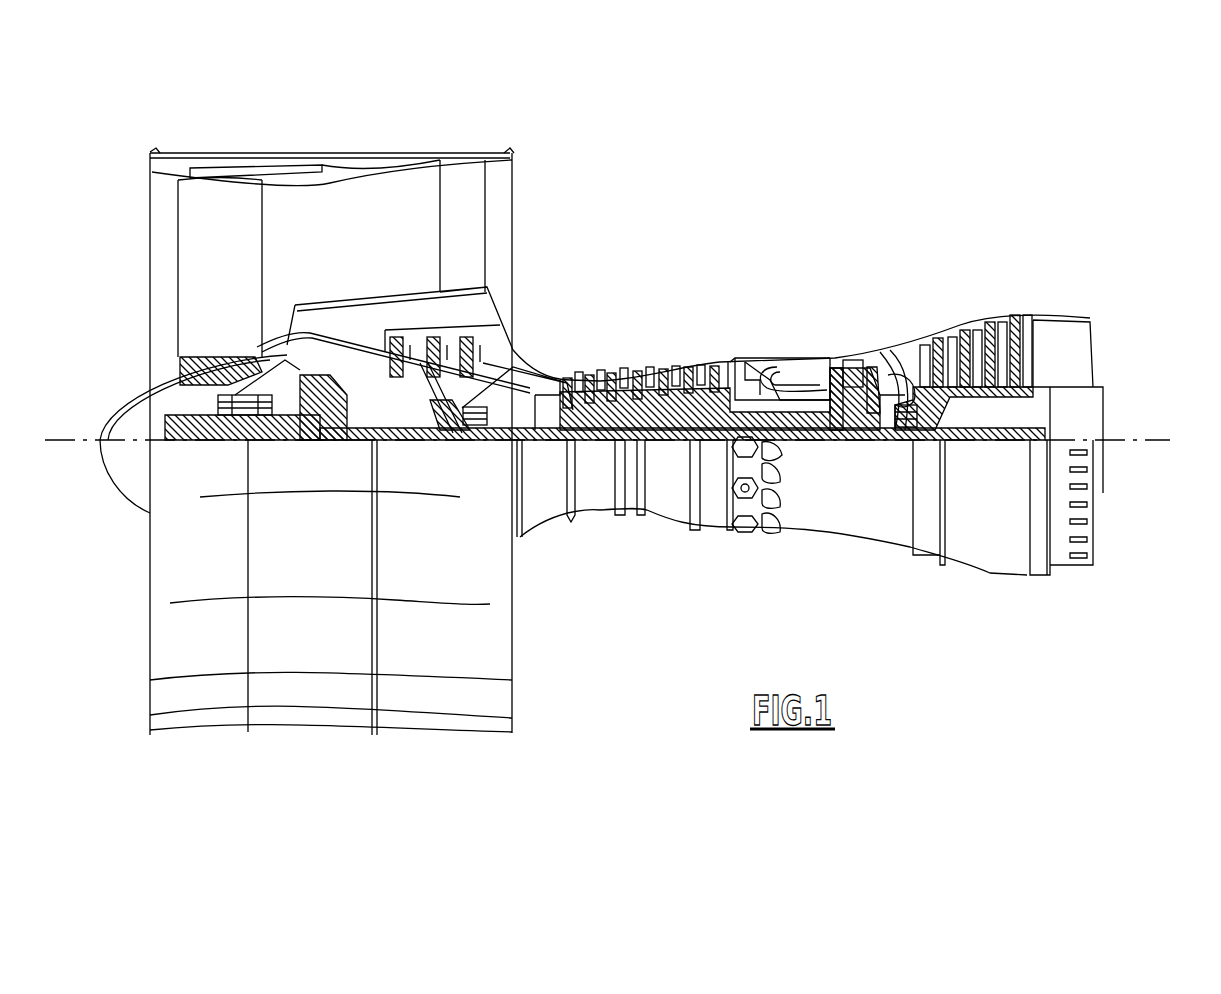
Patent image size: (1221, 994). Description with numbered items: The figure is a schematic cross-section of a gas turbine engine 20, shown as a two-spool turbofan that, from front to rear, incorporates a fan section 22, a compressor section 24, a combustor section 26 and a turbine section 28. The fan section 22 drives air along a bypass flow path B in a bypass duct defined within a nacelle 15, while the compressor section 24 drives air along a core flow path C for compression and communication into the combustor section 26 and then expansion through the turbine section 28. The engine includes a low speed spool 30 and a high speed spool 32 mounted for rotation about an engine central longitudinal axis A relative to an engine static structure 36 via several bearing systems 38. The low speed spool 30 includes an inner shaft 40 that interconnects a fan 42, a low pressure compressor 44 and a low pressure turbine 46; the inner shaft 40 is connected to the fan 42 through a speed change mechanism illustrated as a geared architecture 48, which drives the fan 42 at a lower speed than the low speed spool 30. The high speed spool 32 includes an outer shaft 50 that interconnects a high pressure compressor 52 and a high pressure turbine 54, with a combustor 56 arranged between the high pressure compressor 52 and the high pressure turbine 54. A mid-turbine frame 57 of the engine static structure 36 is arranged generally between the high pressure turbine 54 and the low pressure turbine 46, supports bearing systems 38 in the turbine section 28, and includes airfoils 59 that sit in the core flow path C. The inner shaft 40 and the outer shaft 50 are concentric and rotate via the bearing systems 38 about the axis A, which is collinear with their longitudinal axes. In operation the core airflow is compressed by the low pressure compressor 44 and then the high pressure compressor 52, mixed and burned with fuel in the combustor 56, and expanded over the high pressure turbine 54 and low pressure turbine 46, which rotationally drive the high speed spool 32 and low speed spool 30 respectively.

The nacelle 15 is at (333, 158).
The gas turbine engine 20 is at (790, 205).
The fan section 22 is at (260, 147).
The compressor section 24 is at (566, 343).
The combustor section 26 is at (786, 333).
The turbine section 28 is at (936, 296).
The low speed spool 30 is at (668, 452).
The high speed spool 32 is at (717, 370).
The engine static structure 36 is at (710, 537).
The bearing systems 38 is at (470, 428).
The inner shaft 40 is at (527, 442).
The fan 42 is at (234, 286).
The low pressure compressor 44 is at (442, 350).
The low pressure turbine 46 is at (980, 328).
The geared architecture 48 is at (335, 427).
The outer shaft 50 is at (795, 437).
The high pressure compressor 52 is at (643, 378).
The high pressure turbine 54 is at (855, 358).
The combustor 56 is at (790, 378).
The mid-turbine frame 57 is at (896, 343).
The airfoils 59 is at (890, 376).
The engine central longitudinal axis A is at (1183, 440).
The bypass flow path B is at (290, 232).
The core flow path C is at (330, 336).